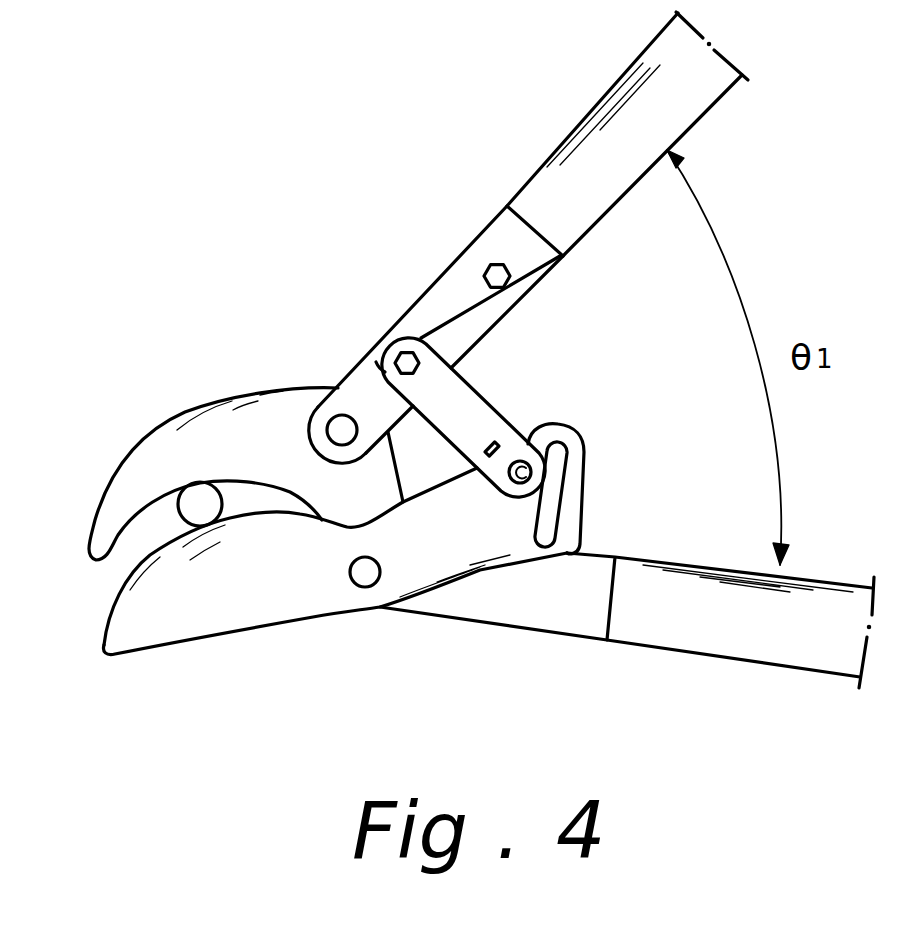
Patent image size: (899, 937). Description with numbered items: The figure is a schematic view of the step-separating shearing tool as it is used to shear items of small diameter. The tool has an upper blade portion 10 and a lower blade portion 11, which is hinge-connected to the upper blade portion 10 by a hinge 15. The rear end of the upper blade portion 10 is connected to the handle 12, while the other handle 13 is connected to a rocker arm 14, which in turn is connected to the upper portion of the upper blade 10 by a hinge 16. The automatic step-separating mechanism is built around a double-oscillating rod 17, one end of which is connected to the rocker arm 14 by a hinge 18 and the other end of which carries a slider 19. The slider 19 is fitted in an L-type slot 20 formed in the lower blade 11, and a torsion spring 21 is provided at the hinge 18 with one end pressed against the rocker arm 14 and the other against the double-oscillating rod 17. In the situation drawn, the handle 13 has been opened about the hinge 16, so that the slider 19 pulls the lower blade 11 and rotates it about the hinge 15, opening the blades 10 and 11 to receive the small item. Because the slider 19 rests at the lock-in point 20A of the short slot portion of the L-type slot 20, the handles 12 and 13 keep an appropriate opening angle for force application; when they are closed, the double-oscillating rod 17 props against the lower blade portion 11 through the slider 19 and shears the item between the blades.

The upper blade portion 10 is at (218, 437).
The lower blade portion 11 is at (215, 612).
The handle 12 is at (702, 637).
The handle 13 is at (553, 190).
The rocker arm 14 is at (453, 290).
The hinge 15 is at (365, 573).
The hinge 16 is at (341, 430).
The double-oscillating rod 17 is at (377, 360).
The hinge 18 is at (407, 362).
The slider 19 is at (502, 494).
The L-type slot 20 is at (548, 510).
The lock-in point 20A is at (527, 458).
The torsion spring 21 is at (488, 290).